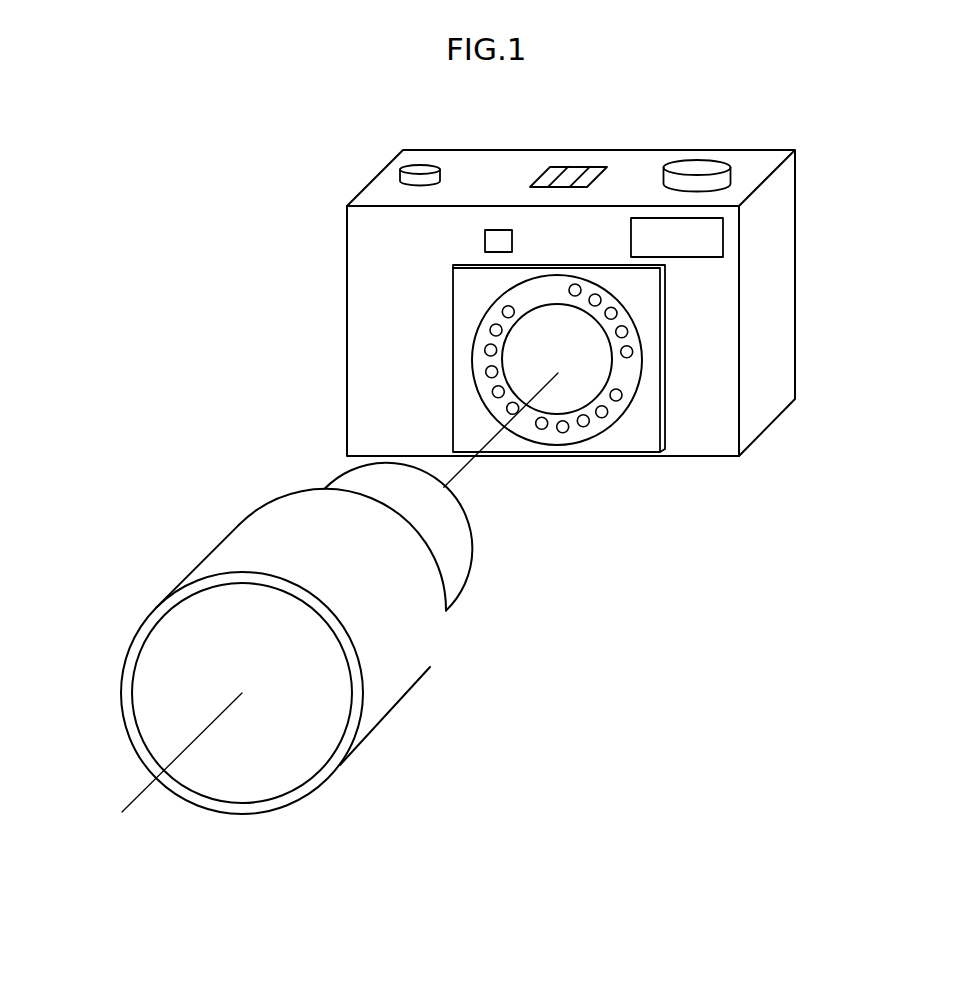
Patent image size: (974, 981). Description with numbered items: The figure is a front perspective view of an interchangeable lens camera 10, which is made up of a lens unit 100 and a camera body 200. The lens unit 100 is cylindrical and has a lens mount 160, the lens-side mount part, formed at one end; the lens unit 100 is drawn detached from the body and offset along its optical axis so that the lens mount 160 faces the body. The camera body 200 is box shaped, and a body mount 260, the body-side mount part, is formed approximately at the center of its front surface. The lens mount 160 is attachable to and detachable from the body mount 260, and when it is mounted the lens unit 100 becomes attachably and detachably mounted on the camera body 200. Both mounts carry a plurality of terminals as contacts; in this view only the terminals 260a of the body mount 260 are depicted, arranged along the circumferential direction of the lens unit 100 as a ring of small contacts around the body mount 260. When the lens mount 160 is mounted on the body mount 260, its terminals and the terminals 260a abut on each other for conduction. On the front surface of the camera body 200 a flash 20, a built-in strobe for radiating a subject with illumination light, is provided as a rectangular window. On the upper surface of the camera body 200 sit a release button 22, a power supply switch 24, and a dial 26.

The camera 10 is at (869, 153).
The flash 20 is at (711, 237).
The release button 22 is at (422, 168).
The power supply switch 24 is at (563, 168).
The dial 26 is at (697, 168).
The lens unit 100 is at (408, 657).
The lens mount 160 is at (448, 575).
The camera body 200 is at (708, 435).
The body mount 260 is at (586, 438).
The terminals 260a is at (547, 430).